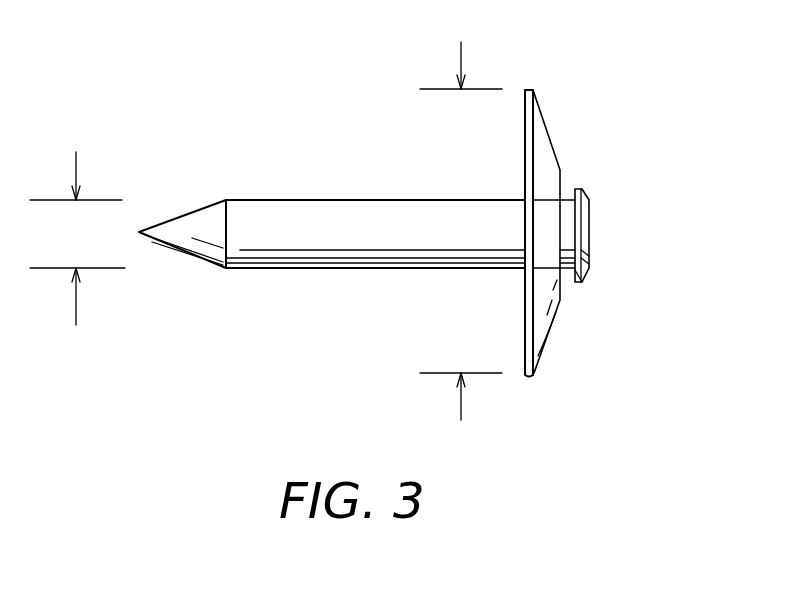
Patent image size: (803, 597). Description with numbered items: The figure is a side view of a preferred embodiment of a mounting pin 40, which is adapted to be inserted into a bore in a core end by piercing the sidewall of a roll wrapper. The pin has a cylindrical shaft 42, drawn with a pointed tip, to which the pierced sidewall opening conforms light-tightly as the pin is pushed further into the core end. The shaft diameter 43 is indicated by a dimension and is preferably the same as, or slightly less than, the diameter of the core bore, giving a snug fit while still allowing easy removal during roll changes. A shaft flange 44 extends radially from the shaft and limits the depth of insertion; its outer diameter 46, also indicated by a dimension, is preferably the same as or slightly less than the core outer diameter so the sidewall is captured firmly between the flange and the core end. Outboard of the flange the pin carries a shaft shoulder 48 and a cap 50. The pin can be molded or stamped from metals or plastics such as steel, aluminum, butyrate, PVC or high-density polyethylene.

The mounting pin 40 is at (315, 296).
The cylindrical shaft 42 is at (302, 220).
The shaft diameter 43 is at (77, 219).
The shaft flange 44 is at (545, 160).
The flange outer diameter 46 is at (461, 214).
The shaft shoulder 48 is at (588, 222).
The cap 50 is at (590, 268).